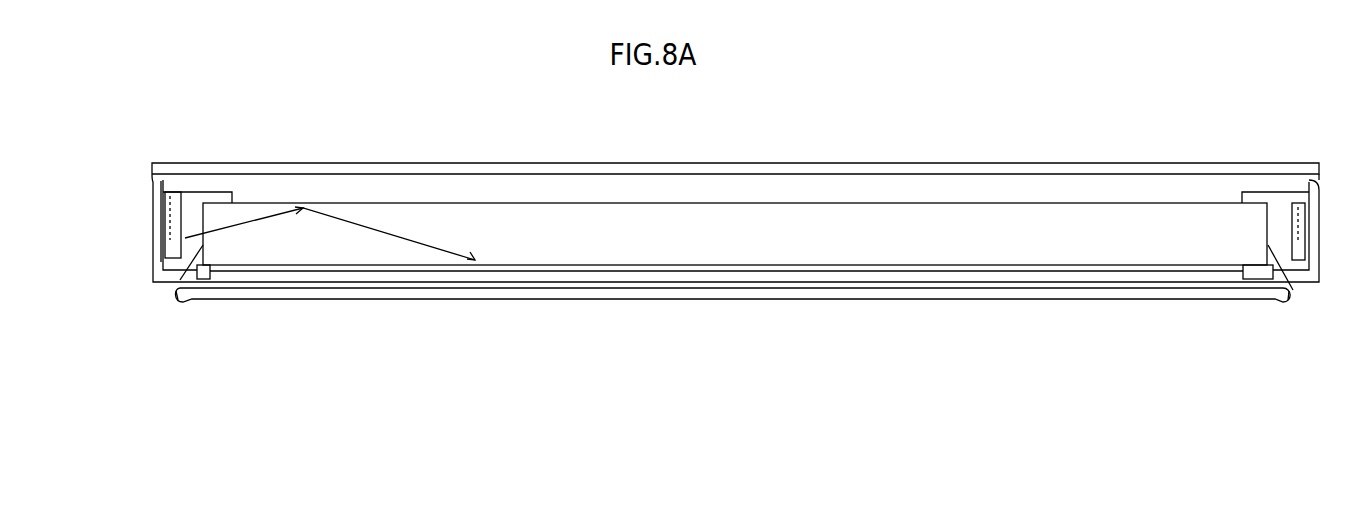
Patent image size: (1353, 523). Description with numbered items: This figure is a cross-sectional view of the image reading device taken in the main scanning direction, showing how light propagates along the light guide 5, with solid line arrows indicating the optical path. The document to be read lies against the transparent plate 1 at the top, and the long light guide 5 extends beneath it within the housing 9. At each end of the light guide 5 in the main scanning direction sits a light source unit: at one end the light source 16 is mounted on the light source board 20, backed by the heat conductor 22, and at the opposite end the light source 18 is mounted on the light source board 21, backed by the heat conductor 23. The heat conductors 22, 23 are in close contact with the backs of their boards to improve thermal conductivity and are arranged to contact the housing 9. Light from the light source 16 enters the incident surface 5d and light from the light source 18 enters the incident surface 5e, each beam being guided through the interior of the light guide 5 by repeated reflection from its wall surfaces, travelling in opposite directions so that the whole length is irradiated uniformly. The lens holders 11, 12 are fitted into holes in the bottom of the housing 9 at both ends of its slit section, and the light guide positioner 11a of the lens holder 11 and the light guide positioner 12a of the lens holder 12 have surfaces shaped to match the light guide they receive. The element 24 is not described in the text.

The transparent plate 1 is at (987, 167).
The light guide 5 is at (360, 247).
The incident surface 5d is at (185, 304).
The incident surface 5e is at (1287, 303).
The housing 9 is at (658, 285).
The lens holder 11 is at (230, 287).
The light guide positioner 11a is at (210, 280).
The lens holder 12 is at (1247, 283).
The light guide positioner 12a is at (1260, 270).
The light source 16 is at (185, 238).
The light source 18 is at (1288, 247).
The light source board 20 is at (186, 178).
The light source board 21 is at (1293, 203).
The heat conductor 22 is at (163, 181).
The heat conductor 23 is at (1320, 163).
The back sheet 24 is at (483, 292).